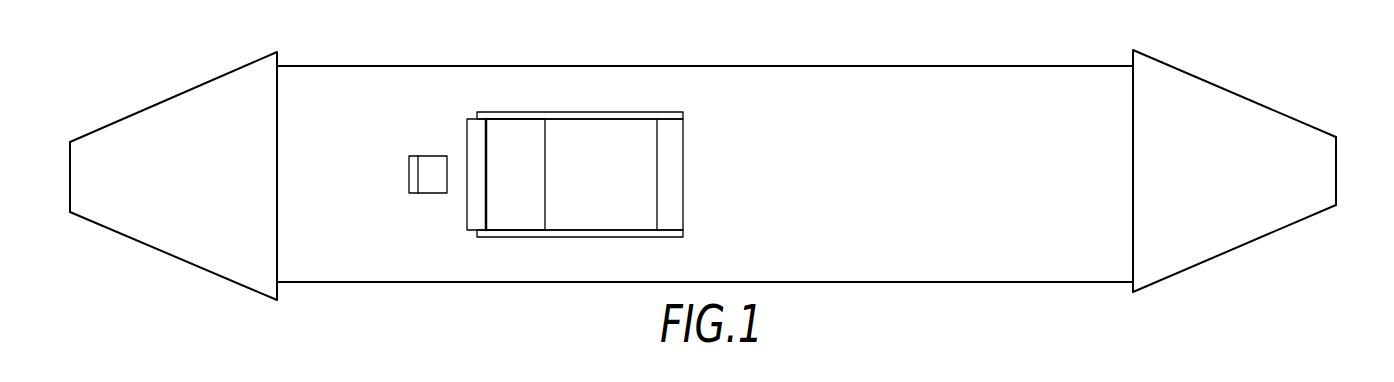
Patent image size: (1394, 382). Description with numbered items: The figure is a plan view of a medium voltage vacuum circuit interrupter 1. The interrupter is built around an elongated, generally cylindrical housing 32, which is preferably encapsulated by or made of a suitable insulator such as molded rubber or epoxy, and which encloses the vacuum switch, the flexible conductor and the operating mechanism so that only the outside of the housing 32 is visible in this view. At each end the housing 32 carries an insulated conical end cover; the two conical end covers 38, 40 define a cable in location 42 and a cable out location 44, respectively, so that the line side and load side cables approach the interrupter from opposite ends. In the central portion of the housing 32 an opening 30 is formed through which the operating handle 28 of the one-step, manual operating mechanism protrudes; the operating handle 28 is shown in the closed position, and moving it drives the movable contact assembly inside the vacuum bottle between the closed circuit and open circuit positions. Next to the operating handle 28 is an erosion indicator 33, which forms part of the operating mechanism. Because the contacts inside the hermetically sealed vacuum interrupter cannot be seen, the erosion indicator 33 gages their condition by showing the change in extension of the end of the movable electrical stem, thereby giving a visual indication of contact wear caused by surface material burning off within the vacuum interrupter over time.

The medium voltage vacuum circuit interrupter 1 is at (1379, 207).
The operating handle 28 is at (517, 133).
The opening 30 is at (594, 150).
The housing 32 is at (929, 62).
The erosion indicator 33 is at (409, 165).
The insulated conical end cover 38 is at (1230, 105).
The insulated conical end cover 40 is at (173, 108).
The cable in location 42 is at (1349, 161).
The cable out location 44 is at (56, 167).